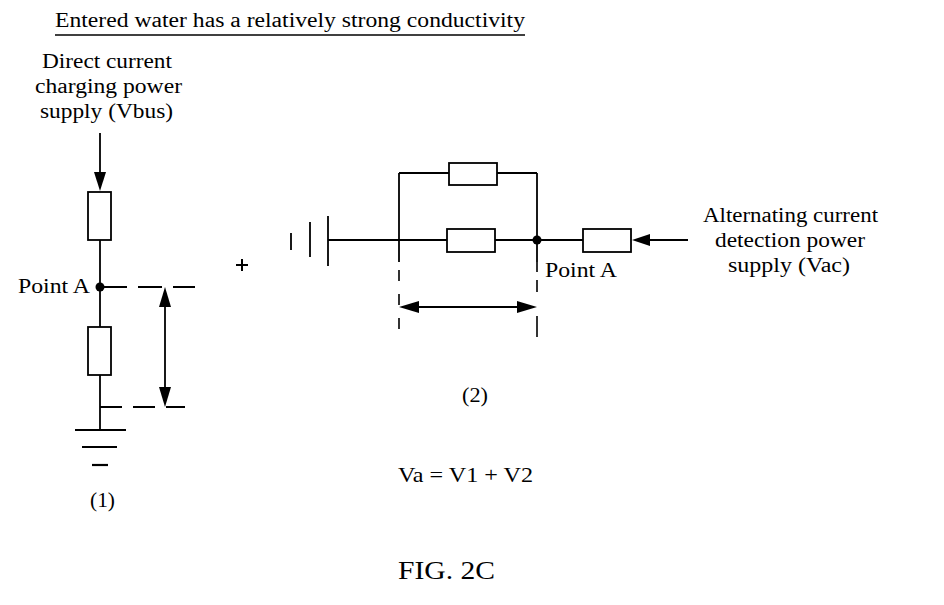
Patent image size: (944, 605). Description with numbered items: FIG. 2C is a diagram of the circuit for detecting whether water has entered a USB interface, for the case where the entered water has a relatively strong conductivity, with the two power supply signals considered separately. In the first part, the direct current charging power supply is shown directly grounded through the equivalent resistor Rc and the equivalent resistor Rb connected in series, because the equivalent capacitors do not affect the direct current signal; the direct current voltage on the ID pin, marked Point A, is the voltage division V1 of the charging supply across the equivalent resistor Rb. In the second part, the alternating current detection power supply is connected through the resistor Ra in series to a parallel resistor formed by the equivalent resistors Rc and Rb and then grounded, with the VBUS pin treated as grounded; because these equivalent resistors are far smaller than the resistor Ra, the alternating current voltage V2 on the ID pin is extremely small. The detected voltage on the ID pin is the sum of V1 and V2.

The equivalent resistor Rc is at (119, 216).
The equivalent resistor Rb is at (119, 351).
The resistor Ra is at (607, 269).
The direct current voltage value V1 is at (181, 347).
The alternating current voltage value V2 is at (468, 323).